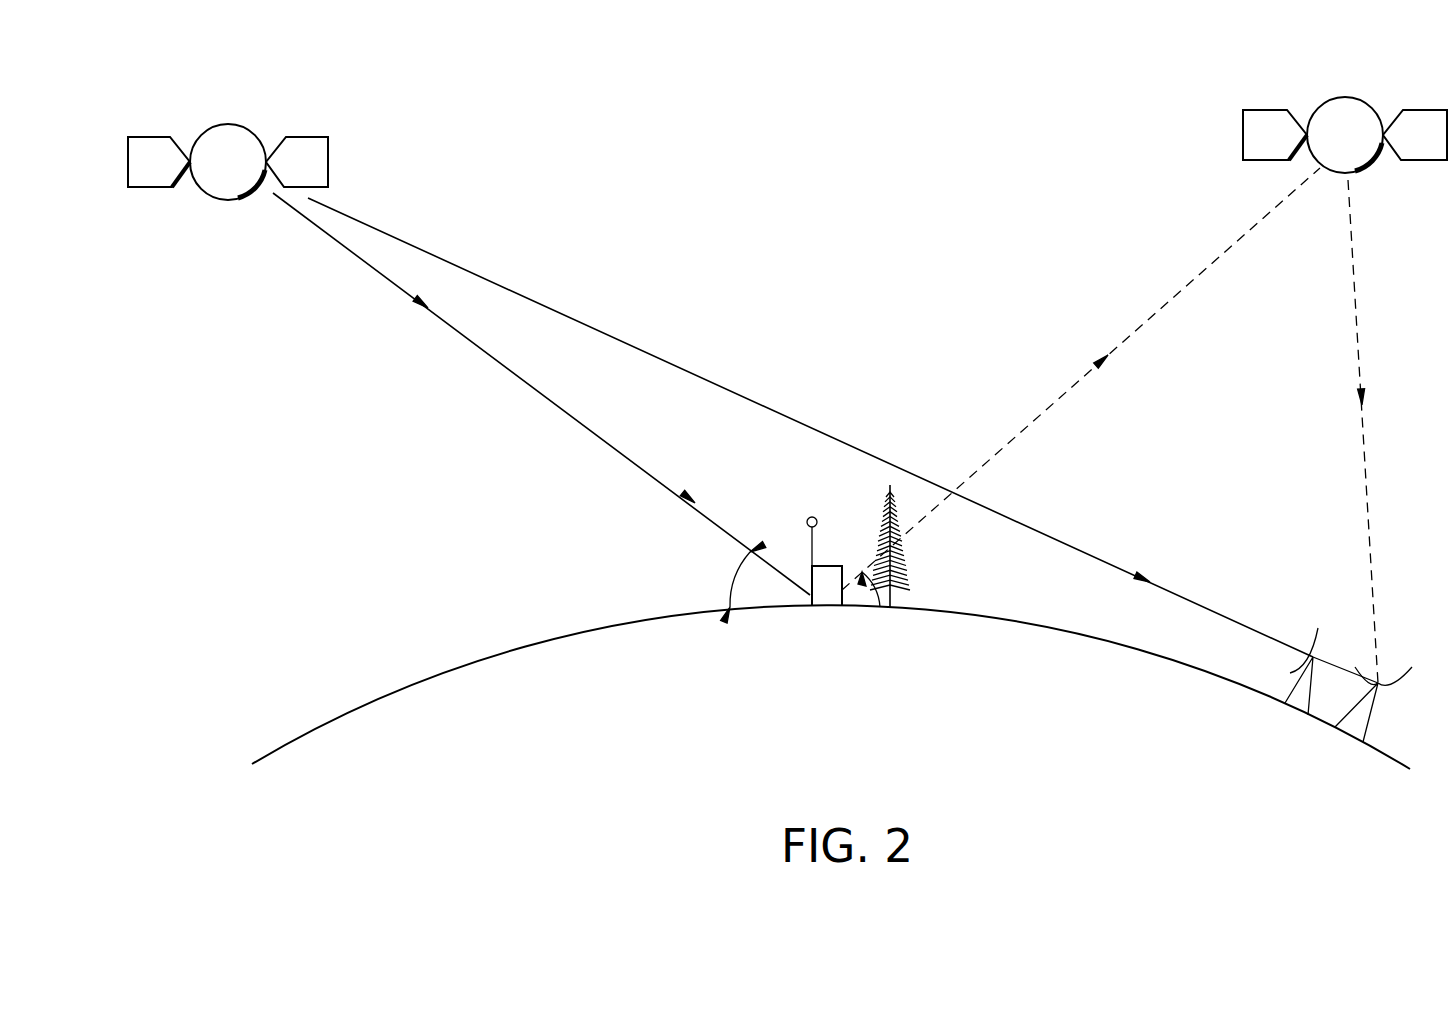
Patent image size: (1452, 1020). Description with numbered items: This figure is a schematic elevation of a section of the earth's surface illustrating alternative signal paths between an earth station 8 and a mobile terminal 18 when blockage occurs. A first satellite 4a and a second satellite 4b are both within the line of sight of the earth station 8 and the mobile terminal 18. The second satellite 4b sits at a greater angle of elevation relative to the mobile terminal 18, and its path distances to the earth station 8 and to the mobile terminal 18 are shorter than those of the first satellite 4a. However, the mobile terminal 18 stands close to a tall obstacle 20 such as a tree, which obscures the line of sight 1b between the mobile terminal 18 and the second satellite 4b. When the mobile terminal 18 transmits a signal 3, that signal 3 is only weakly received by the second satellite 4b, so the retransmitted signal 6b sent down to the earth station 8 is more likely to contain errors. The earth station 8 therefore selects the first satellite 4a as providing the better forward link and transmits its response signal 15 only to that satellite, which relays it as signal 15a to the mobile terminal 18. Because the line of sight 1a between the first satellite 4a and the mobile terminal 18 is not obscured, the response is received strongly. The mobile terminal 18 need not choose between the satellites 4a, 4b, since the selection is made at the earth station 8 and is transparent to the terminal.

The first satellite 4a is at (224, 138).
The second satellite 4b is at (1345, 114).
The line of sight between first satellite and mobile terminal 1a is at (545, 396).
The line of sight between mobile terminal and second satellite 1b is at (1021, 431).
The retransmitted response signal 15a is at (428, 312).
The response signal 15 is at (1146, 578).
The signal transmitted by the mobile terminal 3 is at (690, 504).
The retransmitted signal 6b is at (1365, 396).
The mobile terminal 18 is at (825, 597).
The tall obstacle 20 is at (882, 524).
The earth station 8 is at (1332, 702).